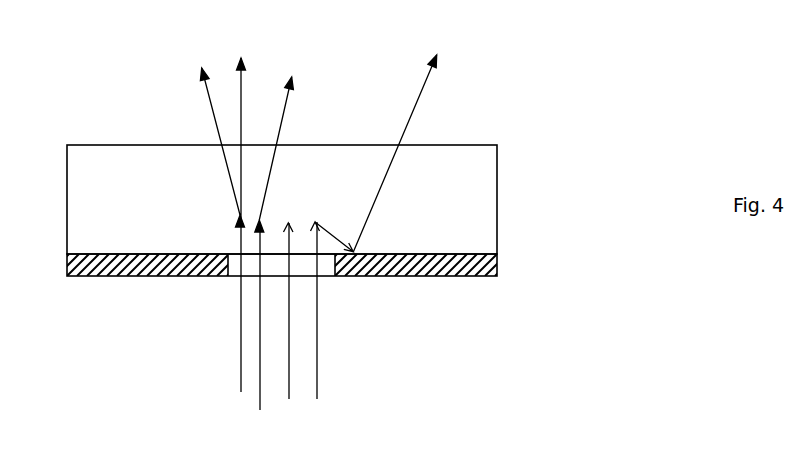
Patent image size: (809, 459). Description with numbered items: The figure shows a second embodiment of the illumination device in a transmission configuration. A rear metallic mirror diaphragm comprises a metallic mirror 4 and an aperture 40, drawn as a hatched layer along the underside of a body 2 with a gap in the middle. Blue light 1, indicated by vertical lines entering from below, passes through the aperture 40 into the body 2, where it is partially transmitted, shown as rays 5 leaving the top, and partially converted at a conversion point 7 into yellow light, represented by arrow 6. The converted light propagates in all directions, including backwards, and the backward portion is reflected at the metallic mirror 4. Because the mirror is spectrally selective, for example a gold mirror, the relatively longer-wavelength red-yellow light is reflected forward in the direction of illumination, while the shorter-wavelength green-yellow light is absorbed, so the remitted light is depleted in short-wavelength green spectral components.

The blue light 1 is at (284, 422).
The body 2 is at (475, 198).
The metallic mirror 4 is at (497, 253).
The transmitted light rays 5 is at (222, 132).
The yellow light 6 is at (350, 142).
The conversion point 7 is at (316, 222).
The aperture 40 is at (335, 276).